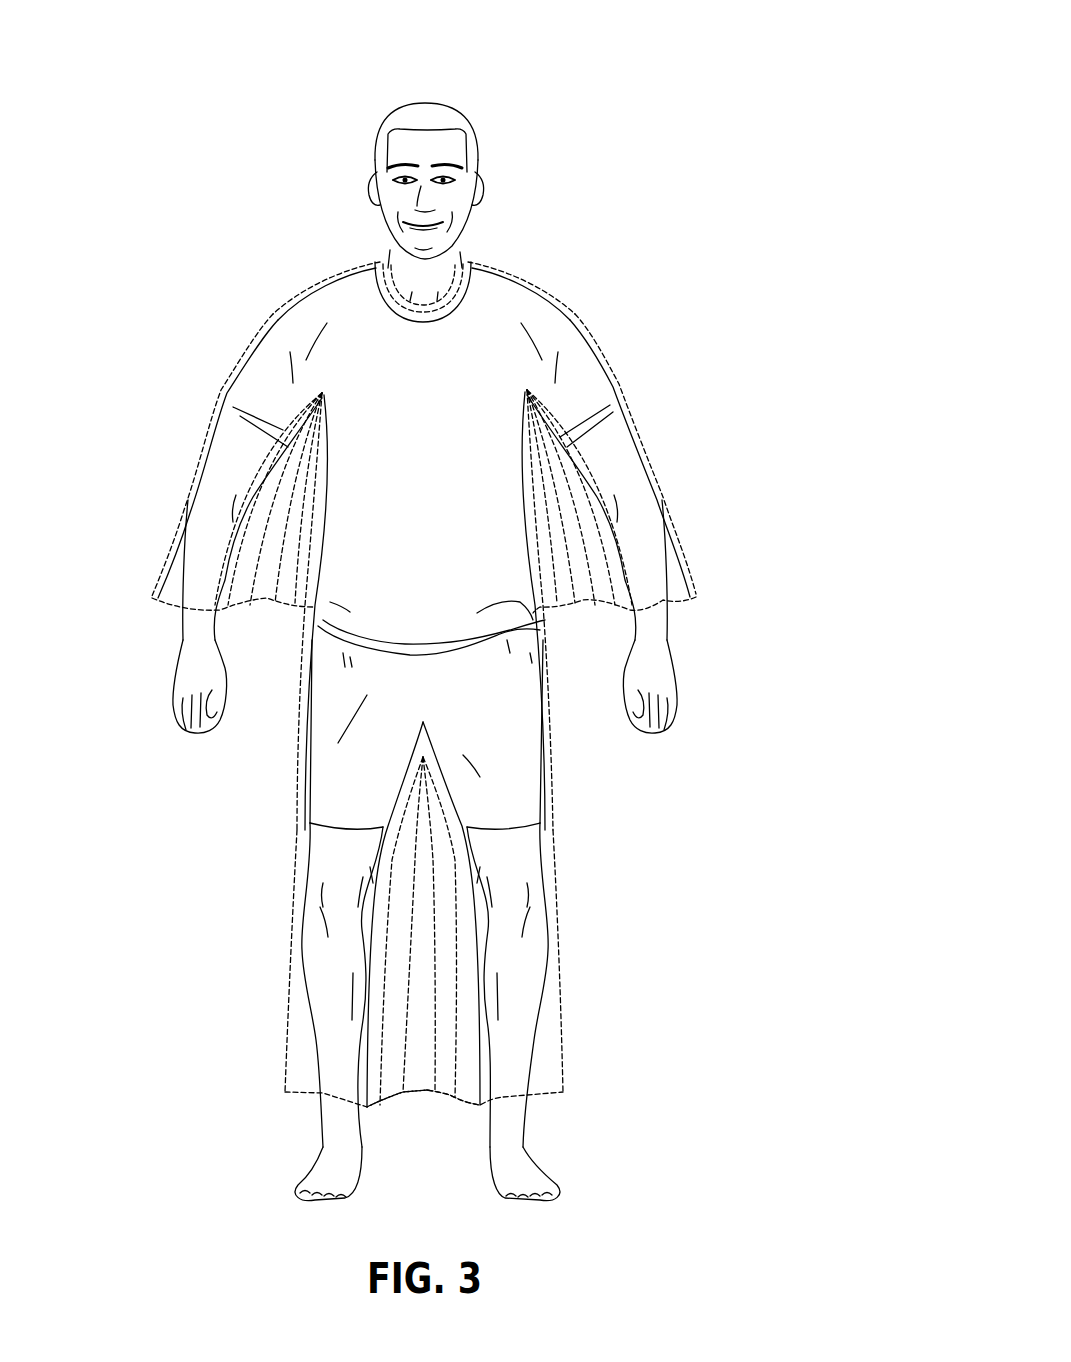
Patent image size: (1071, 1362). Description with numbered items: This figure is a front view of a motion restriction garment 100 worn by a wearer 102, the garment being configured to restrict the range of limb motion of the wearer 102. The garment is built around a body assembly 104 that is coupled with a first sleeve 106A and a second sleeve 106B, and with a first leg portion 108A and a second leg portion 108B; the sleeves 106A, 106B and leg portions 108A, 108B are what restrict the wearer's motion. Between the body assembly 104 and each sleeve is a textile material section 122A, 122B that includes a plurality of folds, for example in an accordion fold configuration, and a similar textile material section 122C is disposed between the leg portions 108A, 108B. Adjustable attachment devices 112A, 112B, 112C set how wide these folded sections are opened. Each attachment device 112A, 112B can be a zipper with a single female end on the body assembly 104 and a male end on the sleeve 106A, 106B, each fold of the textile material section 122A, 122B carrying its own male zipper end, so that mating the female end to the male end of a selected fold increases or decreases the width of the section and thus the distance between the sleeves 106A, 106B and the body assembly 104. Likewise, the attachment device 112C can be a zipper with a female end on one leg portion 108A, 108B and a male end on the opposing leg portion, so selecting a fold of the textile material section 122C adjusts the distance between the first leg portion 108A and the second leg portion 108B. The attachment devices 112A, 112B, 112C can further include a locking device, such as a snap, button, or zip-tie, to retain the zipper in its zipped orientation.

The motion restriction garment 100 is at (712, 36).
The wearer 102 is at (495, 110).
The body assembly 104 is at (423, 553).
The first sleeve 106A is at (230, 384).
The second sleeve 106B is at (615, 372).
The first leg portion 108A is at (292, 868).
The second leg portion 108B is at (553, 842).
The attachment device 112A is at (256, 619).
The attachment device 112B is at (595, 620).
The attachment device 112C is at (416, 1124).
The textile material section 122A is at (265, 537).
The textile material section 122B is at (587, 538).
The textile material section 122C is at (427, 1013).